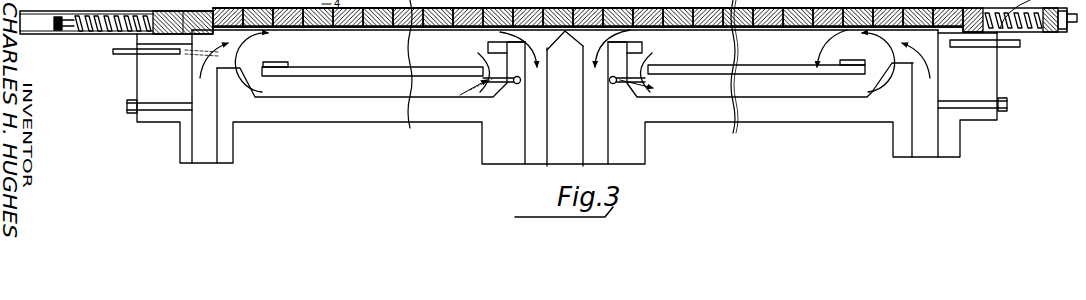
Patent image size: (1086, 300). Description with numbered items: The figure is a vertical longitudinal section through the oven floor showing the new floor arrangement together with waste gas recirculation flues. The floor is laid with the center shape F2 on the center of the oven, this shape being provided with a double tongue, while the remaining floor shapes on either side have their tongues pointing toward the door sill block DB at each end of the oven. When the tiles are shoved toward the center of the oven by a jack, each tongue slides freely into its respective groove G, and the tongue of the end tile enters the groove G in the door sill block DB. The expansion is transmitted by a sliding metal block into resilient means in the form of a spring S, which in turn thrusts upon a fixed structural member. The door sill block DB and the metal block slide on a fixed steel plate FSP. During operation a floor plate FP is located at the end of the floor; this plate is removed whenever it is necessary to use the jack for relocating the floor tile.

The floor plate FP is at (112, 8).
The fixed steel plate FSP is at (65, 35).
The spring S is at (105, 35).
The groove G is at (183, 31).
The floor shape F2 is at (563, 25).
The door sill block DB is at (921, 27).